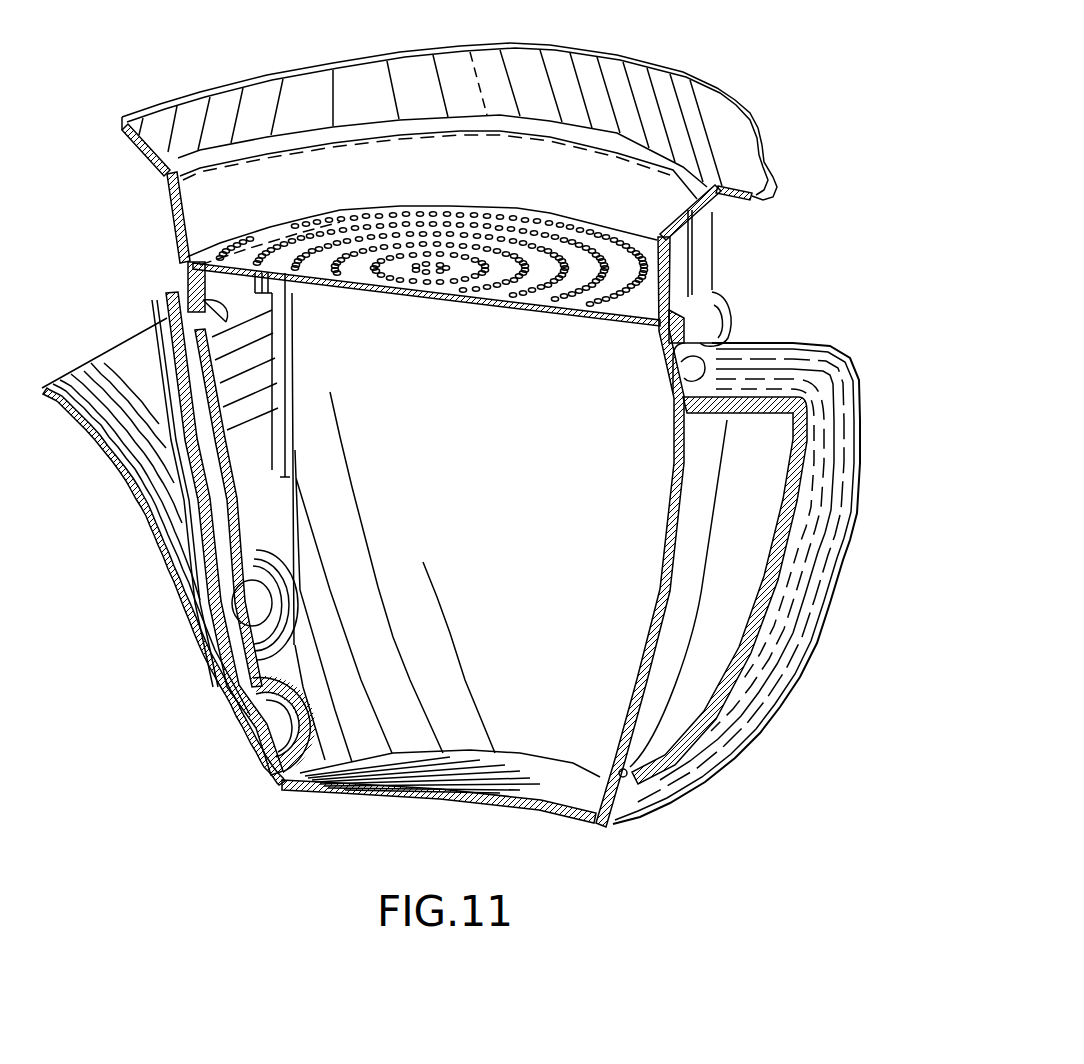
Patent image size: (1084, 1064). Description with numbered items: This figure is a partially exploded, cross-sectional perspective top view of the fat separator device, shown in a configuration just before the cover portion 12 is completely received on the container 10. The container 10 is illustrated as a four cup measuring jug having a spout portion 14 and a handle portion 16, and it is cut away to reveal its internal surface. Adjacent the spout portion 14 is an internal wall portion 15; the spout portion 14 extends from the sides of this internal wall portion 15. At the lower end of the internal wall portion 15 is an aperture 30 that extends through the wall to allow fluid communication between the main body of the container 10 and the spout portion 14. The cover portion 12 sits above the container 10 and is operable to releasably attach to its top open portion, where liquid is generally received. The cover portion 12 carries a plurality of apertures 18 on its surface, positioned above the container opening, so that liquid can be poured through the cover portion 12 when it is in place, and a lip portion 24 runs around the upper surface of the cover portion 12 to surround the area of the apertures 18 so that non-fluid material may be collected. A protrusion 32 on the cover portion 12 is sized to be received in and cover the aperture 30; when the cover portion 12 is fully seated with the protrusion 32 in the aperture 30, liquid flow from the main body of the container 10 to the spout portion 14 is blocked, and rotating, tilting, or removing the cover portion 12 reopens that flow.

The container 10 is at (786, 703).
The cover portion 12 is at (779, 157).
The spout portion 14 is at (96, 447).
The internal wall portion 15 is at (203, 527).
The handle portion 16 is at (733, 750).
The apertures 18 is at (648, 270).
The lip portion 24 is at (635, 85).
The aperture 30 is at (295, 722).
The protrusion 32 is at (247, 608).